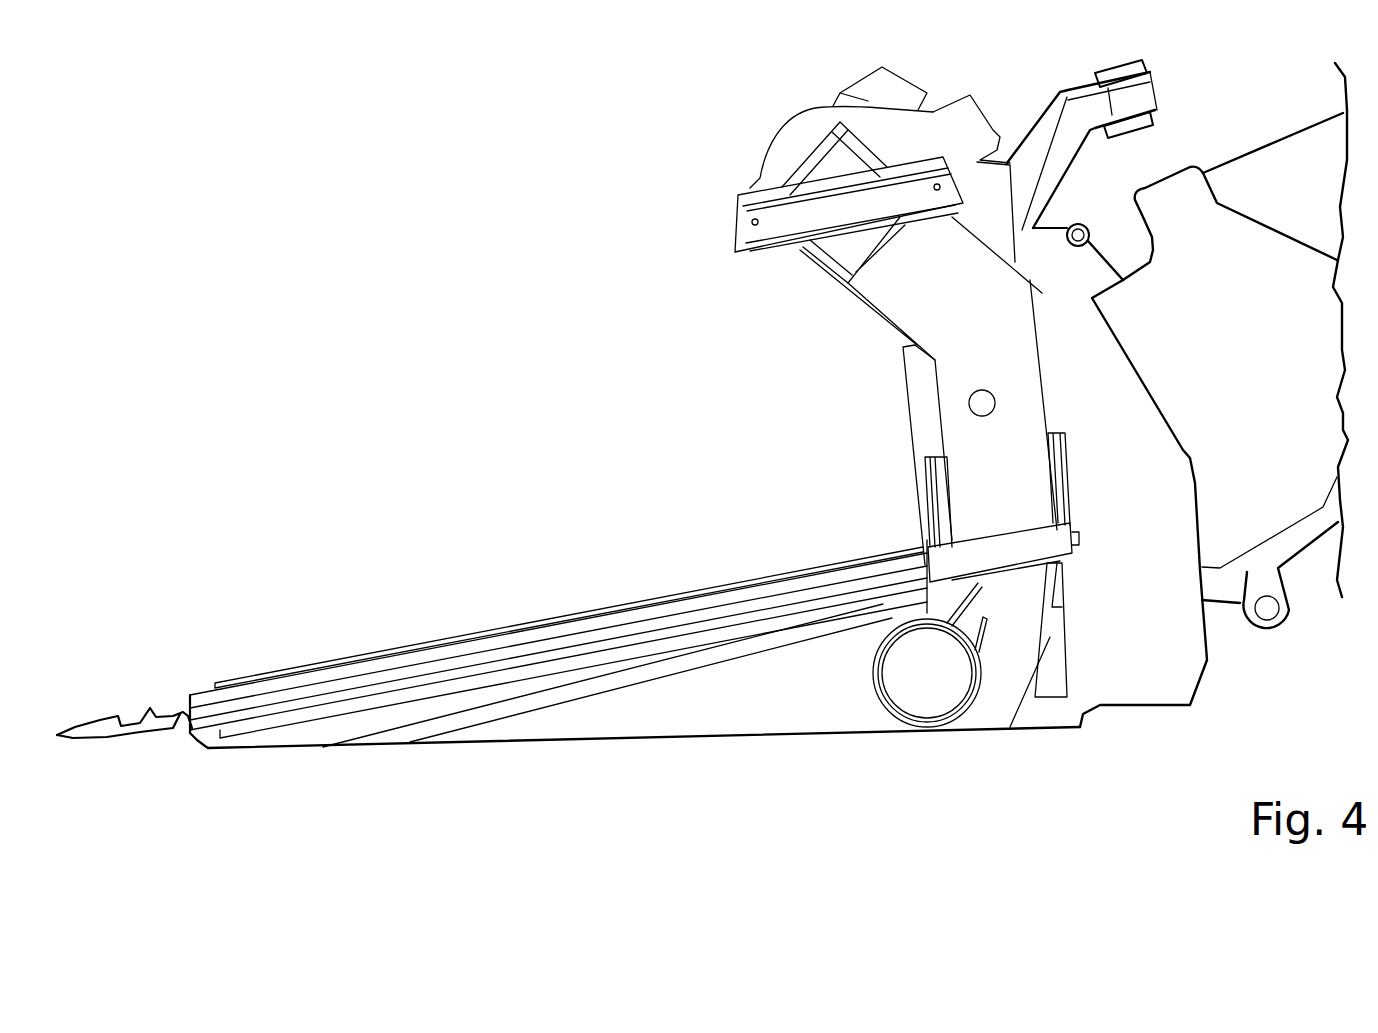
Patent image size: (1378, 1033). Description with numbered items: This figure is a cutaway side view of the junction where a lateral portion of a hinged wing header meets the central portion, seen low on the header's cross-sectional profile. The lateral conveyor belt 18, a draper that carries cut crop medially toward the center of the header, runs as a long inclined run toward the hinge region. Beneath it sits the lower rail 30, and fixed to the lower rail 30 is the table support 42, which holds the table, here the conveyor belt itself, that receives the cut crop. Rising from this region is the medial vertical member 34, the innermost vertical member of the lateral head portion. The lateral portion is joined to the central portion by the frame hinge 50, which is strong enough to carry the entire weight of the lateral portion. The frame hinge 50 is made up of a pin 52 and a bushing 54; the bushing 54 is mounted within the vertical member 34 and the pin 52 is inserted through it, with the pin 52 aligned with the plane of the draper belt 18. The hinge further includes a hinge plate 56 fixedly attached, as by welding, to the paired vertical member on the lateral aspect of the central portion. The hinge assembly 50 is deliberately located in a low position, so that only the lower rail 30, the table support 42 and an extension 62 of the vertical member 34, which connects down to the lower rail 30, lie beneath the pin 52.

The lateral conveyor belt 18 is at (302, 683).
The lower rail 30 is at (910, 688).
The medial vertical member 34 is at (975, 482).
The table support 42 is at (745, 708).
The frame hinge 50 is at (783, 470).
The pin 52 is at (1021, 547).
The bushing 54 is at (1063, 593).
The frame bracket 56 is at (1073, 467).
The extension of the vertical member 62 is at (983, 672).